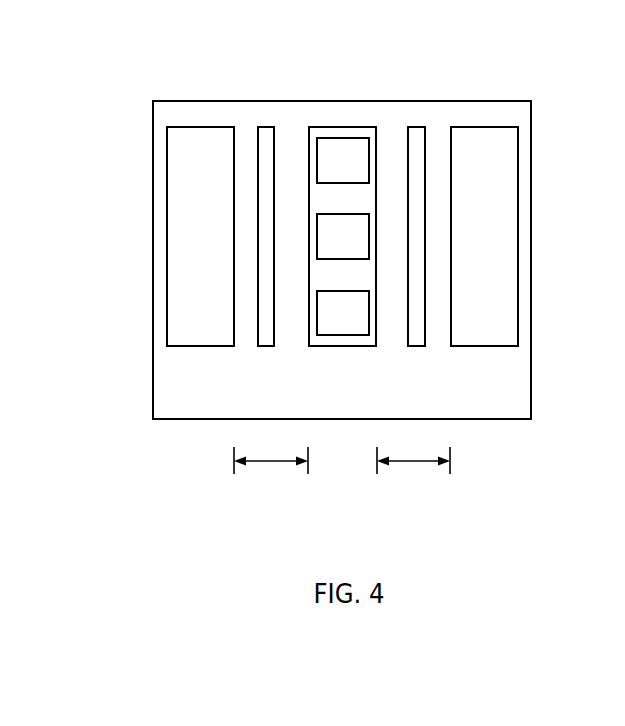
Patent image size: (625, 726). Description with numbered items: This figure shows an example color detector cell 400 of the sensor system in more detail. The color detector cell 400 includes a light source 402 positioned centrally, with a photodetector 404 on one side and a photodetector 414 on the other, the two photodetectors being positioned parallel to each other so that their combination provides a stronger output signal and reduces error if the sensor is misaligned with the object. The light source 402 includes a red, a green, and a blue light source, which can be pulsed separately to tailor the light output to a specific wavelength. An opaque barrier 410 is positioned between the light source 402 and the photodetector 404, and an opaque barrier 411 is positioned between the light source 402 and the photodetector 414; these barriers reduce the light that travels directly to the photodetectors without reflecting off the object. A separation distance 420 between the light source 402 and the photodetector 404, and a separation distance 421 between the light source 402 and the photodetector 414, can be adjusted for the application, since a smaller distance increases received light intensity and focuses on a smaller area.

The color detector cell 400 is at (58, 20).
The light source 402 is at (345, 118).
The photodetector 404 is at (208, 205).
The opaque barrier 410 is at (267, 119).
The opaque barrier 411 is at (419, 118).
The photodetector 414 is at (490, 206).
The separation distance 420 is at (258, 471).
The separation distance 421 is at (401, 471).